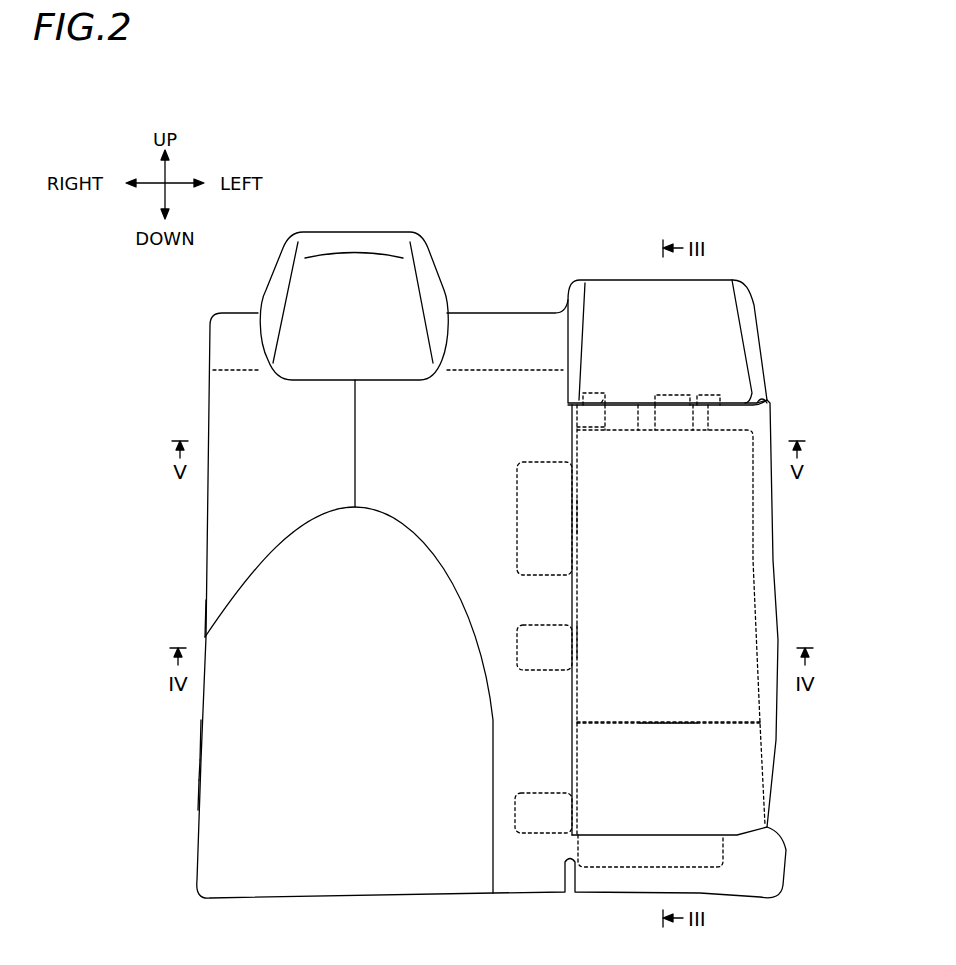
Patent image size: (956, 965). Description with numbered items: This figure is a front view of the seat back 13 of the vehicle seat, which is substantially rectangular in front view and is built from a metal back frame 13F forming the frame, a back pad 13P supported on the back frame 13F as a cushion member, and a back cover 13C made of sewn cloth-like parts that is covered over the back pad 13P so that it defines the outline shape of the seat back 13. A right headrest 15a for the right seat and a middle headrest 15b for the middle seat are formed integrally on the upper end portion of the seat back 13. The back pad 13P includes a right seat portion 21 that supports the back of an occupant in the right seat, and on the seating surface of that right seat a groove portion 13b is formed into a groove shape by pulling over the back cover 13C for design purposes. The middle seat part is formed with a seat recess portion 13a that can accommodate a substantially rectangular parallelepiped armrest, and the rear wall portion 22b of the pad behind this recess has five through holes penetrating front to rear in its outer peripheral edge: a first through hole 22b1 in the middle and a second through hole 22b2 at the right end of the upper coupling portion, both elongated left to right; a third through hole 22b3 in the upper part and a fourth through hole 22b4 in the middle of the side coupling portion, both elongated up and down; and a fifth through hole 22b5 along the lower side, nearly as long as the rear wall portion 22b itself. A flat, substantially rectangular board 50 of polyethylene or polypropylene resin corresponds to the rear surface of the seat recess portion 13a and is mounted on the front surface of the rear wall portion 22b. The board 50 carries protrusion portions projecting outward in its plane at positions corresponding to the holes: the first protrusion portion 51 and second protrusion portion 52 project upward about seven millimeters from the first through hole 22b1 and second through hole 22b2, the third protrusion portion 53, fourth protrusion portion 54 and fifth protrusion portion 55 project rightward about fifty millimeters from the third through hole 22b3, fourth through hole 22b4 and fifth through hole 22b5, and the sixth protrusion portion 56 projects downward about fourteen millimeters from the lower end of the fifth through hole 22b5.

The seat back 13 is at (502, 216).
The seat recess portion 13a is at (695, 517).
The groove portion 13b is at (268, 557).
The back cover 13C is at (253, 733).
The back pad 13P is at (250, 763).
The back frame 13F is at (252, 790).
The right headrest 15a is at (352, 290).
The middle headrest 15b is at (718, 310).
The right seat portion 21 is at (247, 509).
The rear wall portion 22b is at (737, 707).
The first through hole 22b1 is at (697, 400).
The second through hole 22b2 is at (577, 398).
The third through hole 22b3 is at (578, 517).
The fourth through hole 22b4 is at (578, 641).
The fifth through hole 22b5 is at (670, 723).
The board 50 is at (697, 590).
The first protrusion portion 51 is at (657, 393).
The second protrusion portion 52 is at (603, 400).
The third protrusion portion 53 is at (517, 483).
The fourth protrusion portion 54 is at (543, 670).
The fifth protrusion portion 55 is at (540, 833).
The sixth protrusion portion 56 is at (620, 867).